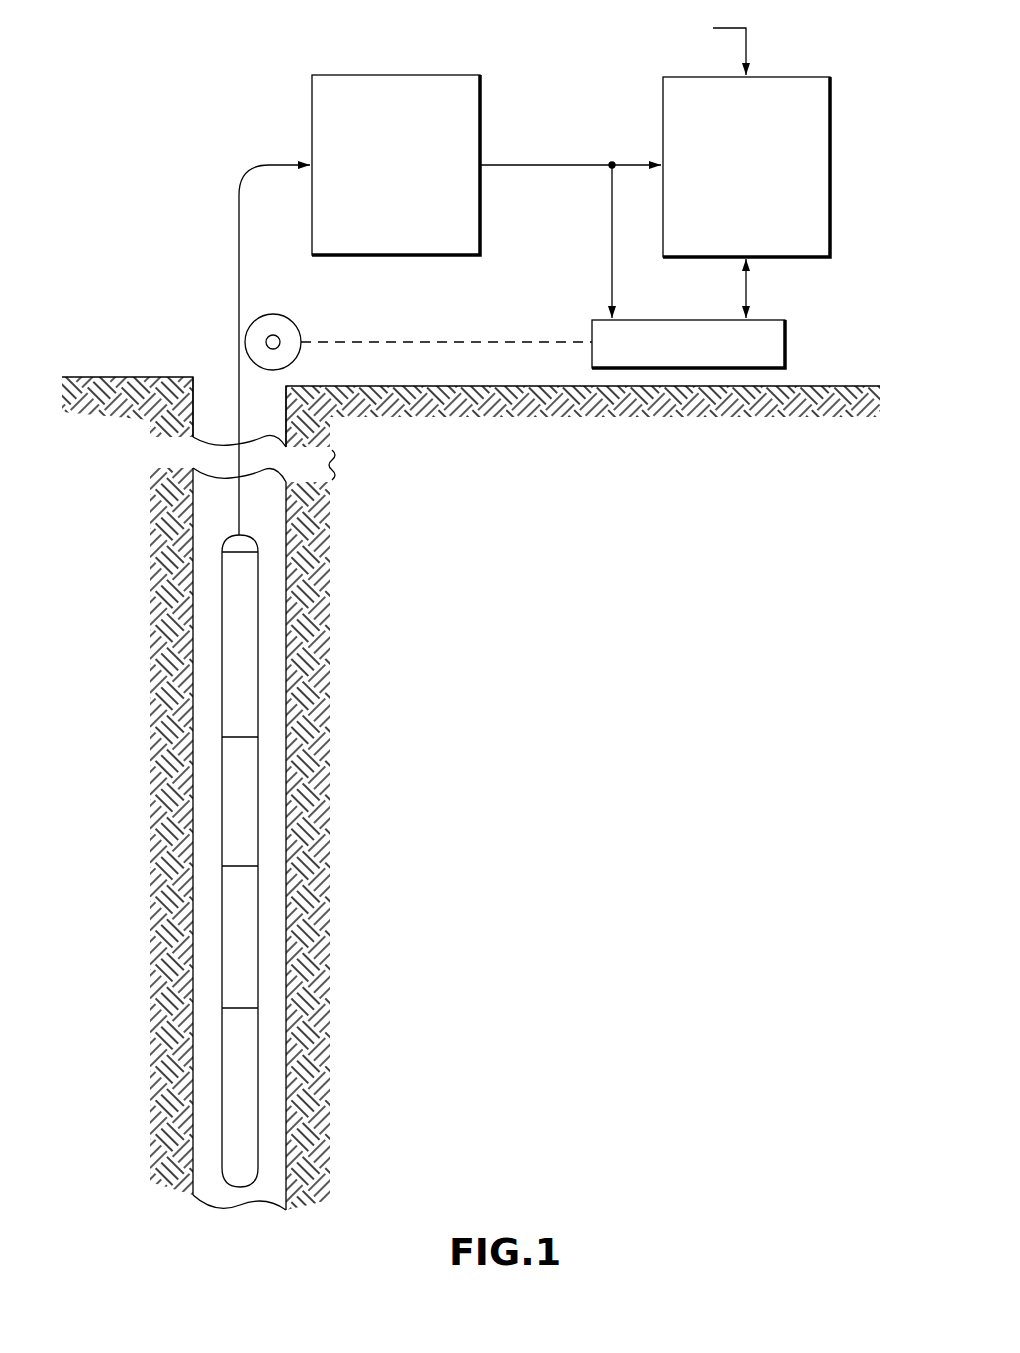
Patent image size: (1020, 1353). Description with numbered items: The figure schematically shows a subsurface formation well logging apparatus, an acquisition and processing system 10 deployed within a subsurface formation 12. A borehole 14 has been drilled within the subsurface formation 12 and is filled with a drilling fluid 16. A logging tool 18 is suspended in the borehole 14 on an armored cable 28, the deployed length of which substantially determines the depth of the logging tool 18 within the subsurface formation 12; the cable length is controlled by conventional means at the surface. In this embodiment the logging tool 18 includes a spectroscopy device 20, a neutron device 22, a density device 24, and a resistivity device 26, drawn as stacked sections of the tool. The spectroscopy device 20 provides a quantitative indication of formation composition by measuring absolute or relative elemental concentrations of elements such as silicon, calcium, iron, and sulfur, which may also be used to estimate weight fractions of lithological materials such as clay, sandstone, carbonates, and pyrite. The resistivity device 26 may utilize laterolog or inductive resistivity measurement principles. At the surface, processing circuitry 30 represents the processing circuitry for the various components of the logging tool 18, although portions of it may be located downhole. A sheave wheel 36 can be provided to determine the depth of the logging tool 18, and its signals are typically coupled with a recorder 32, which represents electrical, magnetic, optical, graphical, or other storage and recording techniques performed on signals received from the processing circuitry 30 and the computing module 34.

The acquisition and processing system 10 is at (208, 56).
The subsurface formation 12 is at (120, 377).
The borehole 14 is at (216, 376).
The drilling fluid 16 is at (210, 627).
The logging tool 18 is at (216, 498).
The spectroscopy device 20 is at (258, 635).
The neutron device 22 is at (258, 745).
The density device 24 is at (258, 878).
The resistivity device 26 is at (258, 1022).
The armored cable 28 is at (239, 408).
The processing circuitry 30 is at (312, 118).
The recorder 32 is at (785, 340).
The computing module 34 is at (830, 128).
The sheave wheel 36 is at (292, 320).